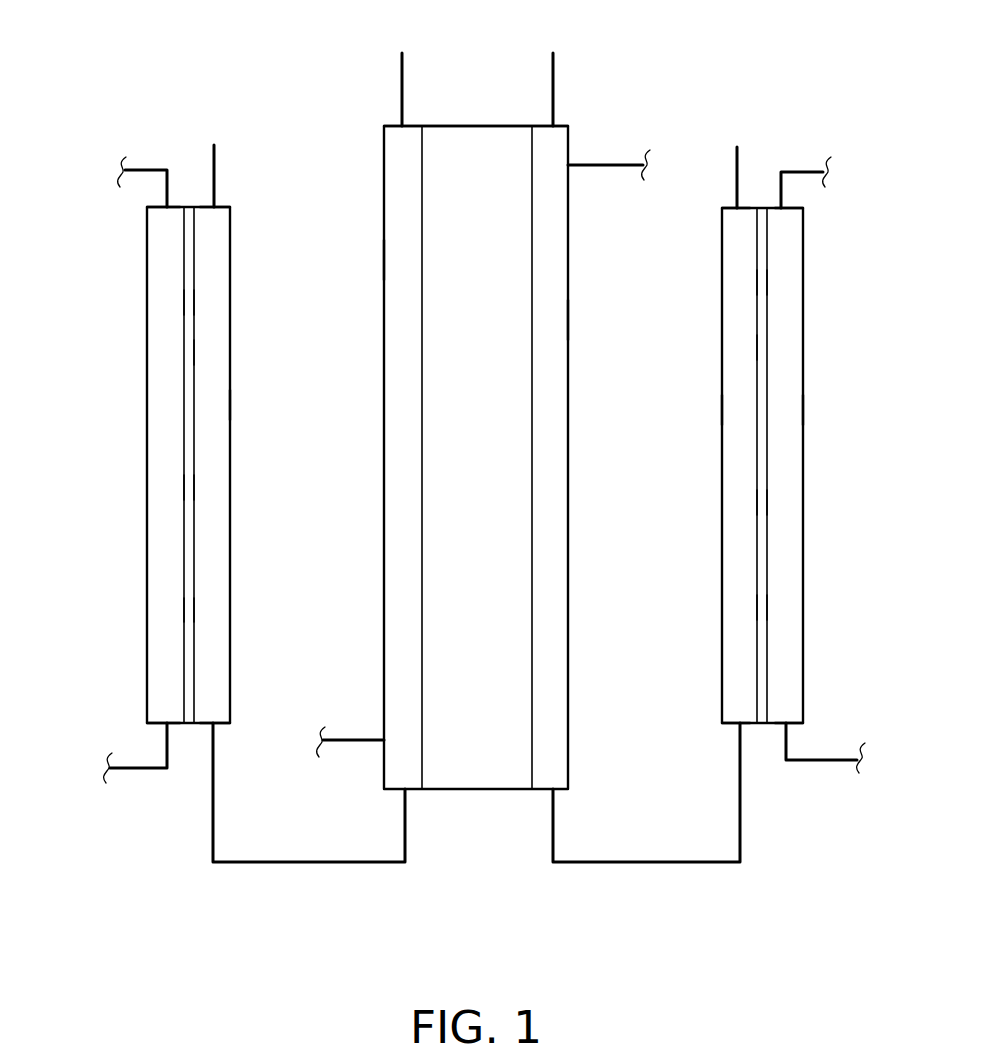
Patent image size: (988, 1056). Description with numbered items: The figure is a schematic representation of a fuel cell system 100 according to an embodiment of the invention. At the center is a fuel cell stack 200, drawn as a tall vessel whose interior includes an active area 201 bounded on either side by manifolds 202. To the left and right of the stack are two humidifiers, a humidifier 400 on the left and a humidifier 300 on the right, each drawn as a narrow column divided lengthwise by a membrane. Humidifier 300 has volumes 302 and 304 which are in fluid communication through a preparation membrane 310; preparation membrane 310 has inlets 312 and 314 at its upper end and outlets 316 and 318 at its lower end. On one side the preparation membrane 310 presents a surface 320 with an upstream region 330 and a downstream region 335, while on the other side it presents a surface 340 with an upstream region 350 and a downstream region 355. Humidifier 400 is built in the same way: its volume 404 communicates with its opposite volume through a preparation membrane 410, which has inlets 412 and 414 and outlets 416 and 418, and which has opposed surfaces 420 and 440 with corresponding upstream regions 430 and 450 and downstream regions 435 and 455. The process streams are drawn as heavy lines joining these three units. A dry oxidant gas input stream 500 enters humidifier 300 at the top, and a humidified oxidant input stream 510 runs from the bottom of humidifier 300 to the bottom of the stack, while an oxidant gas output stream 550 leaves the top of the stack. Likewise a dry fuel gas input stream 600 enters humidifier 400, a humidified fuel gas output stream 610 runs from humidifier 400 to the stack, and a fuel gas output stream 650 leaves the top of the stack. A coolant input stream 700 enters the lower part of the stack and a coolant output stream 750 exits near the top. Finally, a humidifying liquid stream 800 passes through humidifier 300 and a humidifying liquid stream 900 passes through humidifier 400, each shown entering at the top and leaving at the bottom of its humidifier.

The fuel cell system 100 is at (460, 100).
The fuel cell stack 200 is at (497, 205).
The active area 201 is at (500, 282).
The manifolds 202 is at (398, 262).
The humidifier 300 is at (825, 325).
The volume 302 is at (742, 413).
The volume 304 is at (782, 413).
The preparation membrane 310 is at (757, 503).
The inlet 312 is at (727, 215).
The inlet 314 is at (798, 215).
The outlet 316 is at (740, 722).
The outlet 318 is at (787, 722).
The surface 320 is at (757, 347).
The upstream region 330 is at (757, 608).
The downstream region 335 is at (757, 281).
The surface 340 is at (768, 502).
The upstream region 350 is at (768, 608).
The downstream region 355 is at (768, 281).
The humidifier 400 is at (128, 423).
The volume 404 is at (208, 408).
The preparation membrane 410 is at (195, 350).
The inlet 412 is at (165, 208).
The inlet 414 is at (215, 208).
The outlet 416 is at (162, 722).
The outlet 418 is at (212, 722).
The surface 420 is at (195, 488).
The upstream region 430 is at (195, 610).
The downstream region 435 is at (195, 300).
The surface 440 is at (183, 487).
The upstream region 450 is at (183, 610).
The downstream region 455 is at (184, 302).
The dry oxidant gas input stream 500 is at (740, 163).
The humidified oxidant input stream 510 is at (647, 862).
The oxidant gas output stream 550 is at (555, 70).
The dry fuel gas input stream 600 is at (217, 158).
The humidified fuel gas output stream 610 is at (323, 862).
The fuel gas output stream 650 is at (400, 70).
The coolant input stream 700 is at (345, 740).
The coolant output stream 750 is at (603, 163).
The humidifying liquid stream 800 is at (807, 172).
The humidifying liquid stream 900 is at (142, 170).